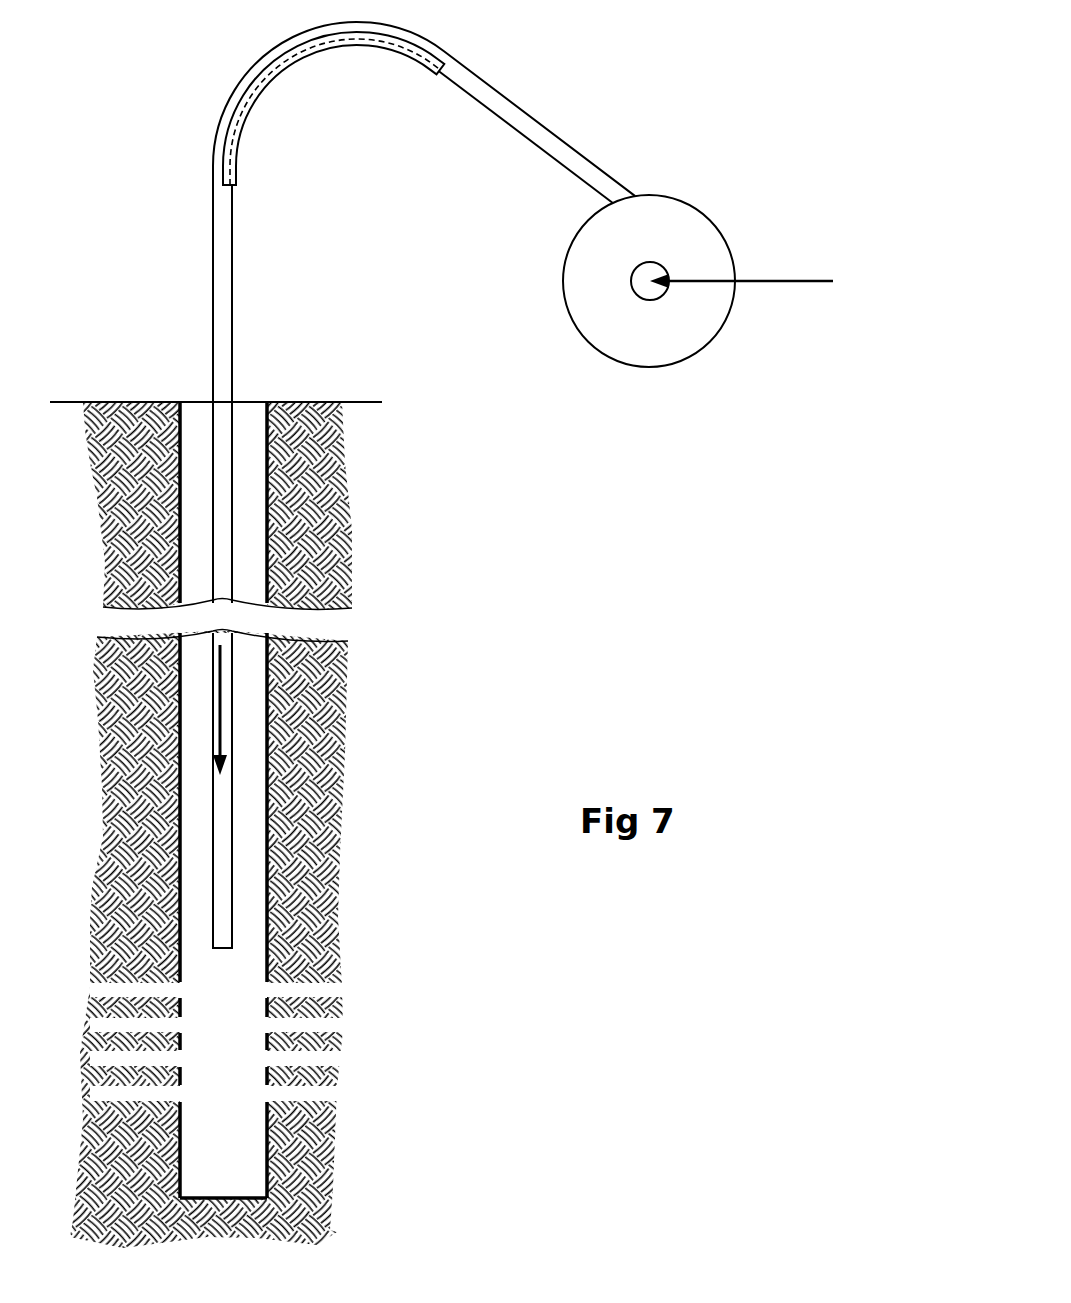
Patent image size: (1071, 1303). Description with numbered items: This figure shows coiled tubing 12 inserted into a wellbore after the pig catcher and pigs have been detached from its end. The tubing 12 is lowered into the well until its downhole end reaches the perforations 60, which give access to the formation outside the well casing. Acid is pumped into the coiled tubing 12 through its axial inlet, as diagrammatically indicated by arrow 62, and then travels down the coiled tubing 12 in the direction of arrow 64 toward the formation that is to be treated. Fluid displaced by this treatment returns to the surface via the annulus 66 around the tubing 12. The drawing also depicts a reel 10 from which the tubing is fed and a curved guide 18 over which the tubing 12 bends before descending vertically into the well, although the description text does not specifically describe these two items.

The reel 10 is at (682, 212).
The coiled tubing 12 is at (530, 135).
The tubing guide / gooseneck 18 is at (258, 108).
The perforations 60 is at (267, 992).
The arrow 62 is at (785, 283).
The arrow 64 is at (223, 690).
The annulus 66 is at (245, 536).